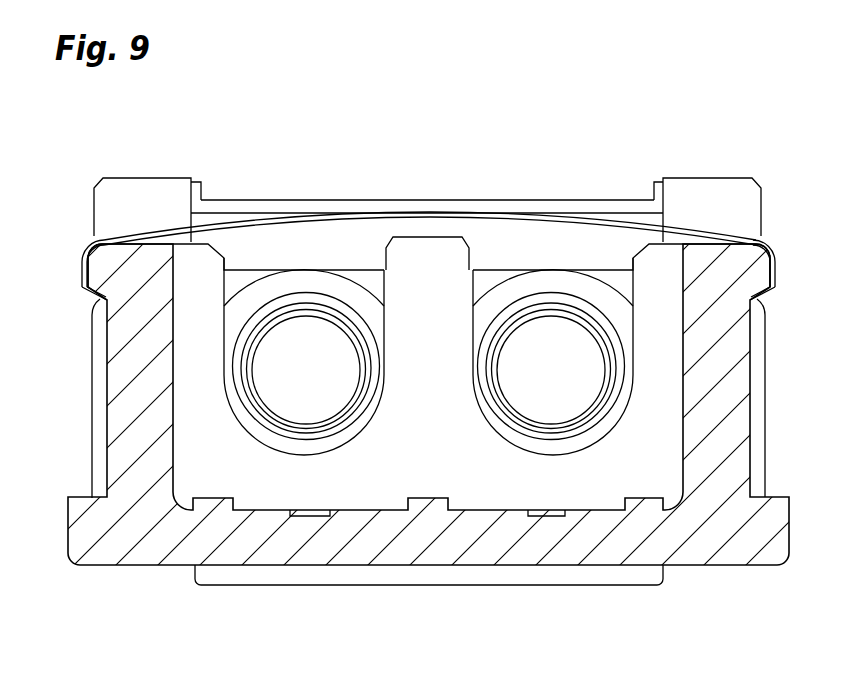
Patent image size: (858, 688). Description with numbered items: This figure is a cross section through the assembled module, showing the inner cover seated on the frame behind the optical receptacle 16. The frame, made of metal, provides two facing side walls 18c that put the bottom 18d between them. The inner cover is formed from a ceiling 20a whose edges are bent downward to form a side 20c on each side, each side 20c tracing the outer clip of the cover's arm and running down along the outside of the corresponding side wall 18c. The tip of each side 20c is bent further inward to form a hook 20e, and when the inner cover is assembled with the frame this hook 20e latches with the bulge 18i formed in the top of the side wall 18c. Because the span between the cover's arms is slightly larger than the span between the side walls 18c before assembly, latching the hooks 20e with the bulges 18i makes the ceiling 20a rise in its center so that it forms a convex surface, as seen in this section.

The optical receptacle 16 is at (708, 187).
The side wall 18c is at (727, 438).
The bottom 18d is at (500, 543).
The bulge 18i is at (100, 273).
The ceiling 20a is at (548, 217).
The side 20c is at (81, 262).
The hook 20e is at (88, 302).